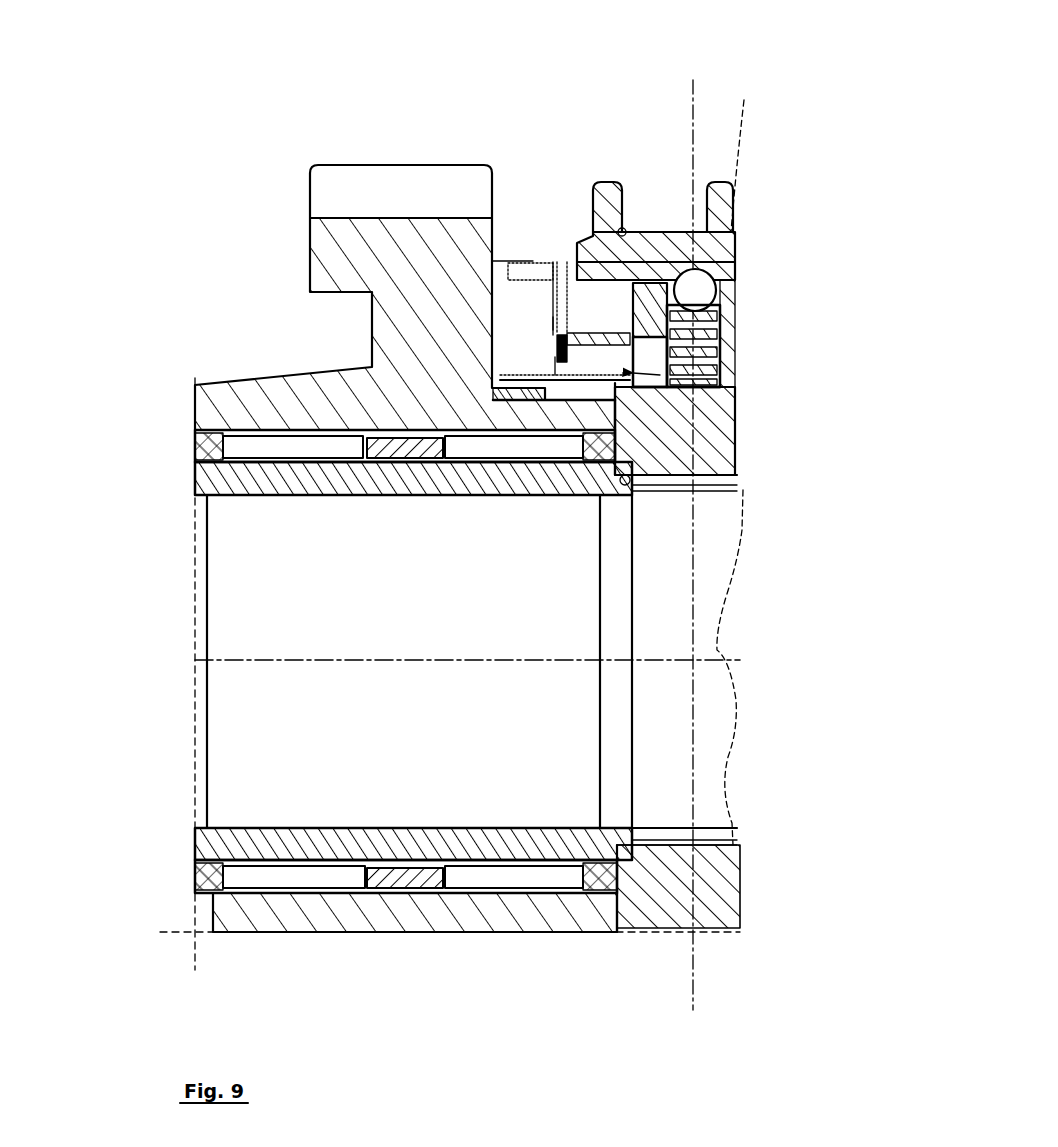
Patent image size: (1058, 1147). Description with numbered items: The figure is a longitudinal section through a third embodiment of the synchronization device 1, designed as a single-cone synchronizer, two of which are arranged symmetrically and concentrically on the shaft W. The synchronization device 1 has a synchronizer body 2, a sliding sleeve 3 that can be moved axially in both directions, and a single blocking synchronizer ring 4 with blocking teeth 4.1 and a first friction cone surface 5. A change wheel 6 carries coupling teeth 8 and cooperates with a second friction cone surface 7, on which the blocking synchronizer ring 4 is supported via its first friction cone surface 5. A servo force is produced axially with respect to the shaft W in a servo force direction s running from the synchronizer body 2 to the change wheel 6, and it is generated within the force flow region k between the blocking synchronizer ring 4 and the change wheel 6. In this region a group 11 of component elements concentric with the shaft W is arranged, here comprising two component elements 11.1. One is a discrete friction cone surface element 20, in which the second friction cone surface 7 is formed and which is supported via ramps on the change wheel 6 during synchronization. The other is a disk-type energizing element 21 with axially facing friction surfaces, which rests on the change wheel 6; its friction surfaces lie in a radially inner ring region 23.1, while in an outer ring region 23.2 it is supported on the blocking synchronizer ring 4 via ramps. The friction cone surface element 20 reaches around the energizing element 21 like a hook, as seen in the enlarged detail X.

The synchronization device 1 is at (276, 209).
The synchronizer body 2 is at (722, 450).
The sliding sleeve 3 is at (725, 190).
The blocking synchronizer ring 4 is at (673, 282).
The blocking teeth 4.1 is at (560, 262).
The first friction cone surface 5 is at (733, 298).
The change wheel 6 is at (380, 164).
The second friction cone surface 7 is at (735, 333).
The coupling teeth 8 is at (507, 264).
The group of component elements 11 is at (657, 390).
The component element 11.1 is at (657, 388).
The friction cone surface element 20 is at (735, 364).
The energizing element 21 is at (645, 331).
The radially inner ring region 23.1 is at (555, 357).
The outer ring region 23.2 is at (553, 317).
The shaft W is at (199, 557).
The detail X is at (623, 227).
The force flow region k is at (192, 293).
The servo force direction s is at (729, 14).